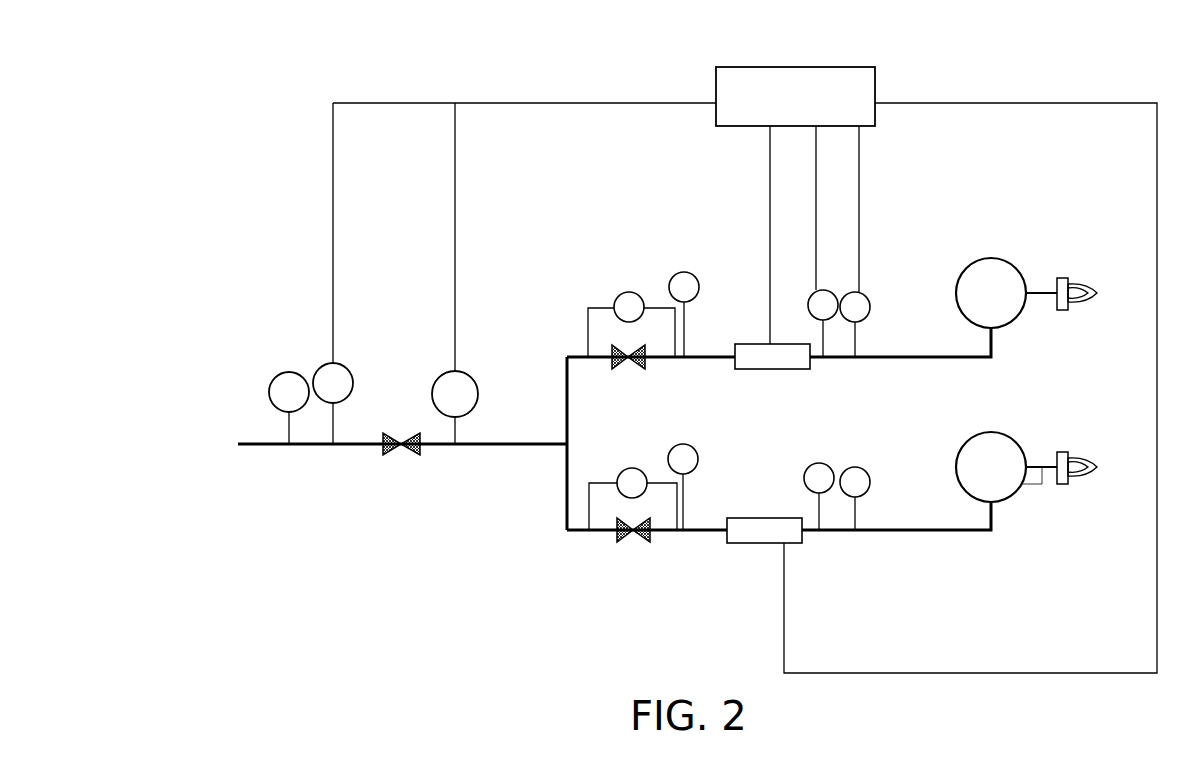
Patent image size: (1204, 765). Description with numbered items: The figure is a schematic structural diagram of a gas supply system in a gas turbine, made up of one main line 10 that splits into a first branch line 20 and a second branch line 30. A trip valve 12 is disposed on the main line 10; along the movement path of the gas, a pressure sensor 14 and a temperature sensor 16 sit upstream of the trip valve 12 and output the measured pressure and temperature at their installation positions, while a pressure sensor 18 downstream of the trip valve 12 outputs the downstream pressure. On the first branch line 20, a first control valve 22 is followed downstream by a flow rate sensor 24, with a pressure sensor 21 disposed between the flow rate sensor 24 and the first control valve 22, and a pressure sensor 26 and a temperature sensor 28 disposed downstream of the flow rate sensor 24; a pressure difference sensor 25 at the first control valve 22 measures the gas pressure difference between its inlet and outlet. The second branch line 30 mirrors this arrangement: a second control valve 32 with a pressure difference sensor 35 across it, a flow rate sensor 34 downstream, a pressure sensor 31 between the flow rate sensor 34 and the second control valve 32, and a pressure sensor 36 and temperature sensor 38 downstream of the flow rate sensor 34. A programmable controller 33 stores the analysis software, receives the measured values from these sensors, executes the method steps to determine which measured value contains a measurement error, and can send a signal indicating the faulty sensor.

The main line 10 is at (444, 449).
The trip valve 12 is at (402, 452).
The pressure sensor 14 is at (281, 400).
The temperature sensor 16 is at (325, 391).
The pressure sensor 18 is at (447, 402).
The first branch line 20 is at (900, 361).
The pressure sensor 21 is at (677, 295).
The first control valve 22 is at (628, 364).
The flow rate sensor 24 is at (767, 364).
The pressure difference sensor 25 is at (622, 315).
The pressure sensor 26 is at (816, 313).
The temperature sensor 28 is at (848, 315).
The second branch line 30 is at (832, 540).
The pressure sensor 31 is at (676, 467).
The second control valve 32 is at (633, 538).
The controller 33 is at (790, 81).
The flow rate sensor 34 is at (758, 543).
The pressure difference sensor 35 is at (625, 491).
The pressure sensor 36 is at (812, 486).
The temperature sensor 38 is at (848, 490).